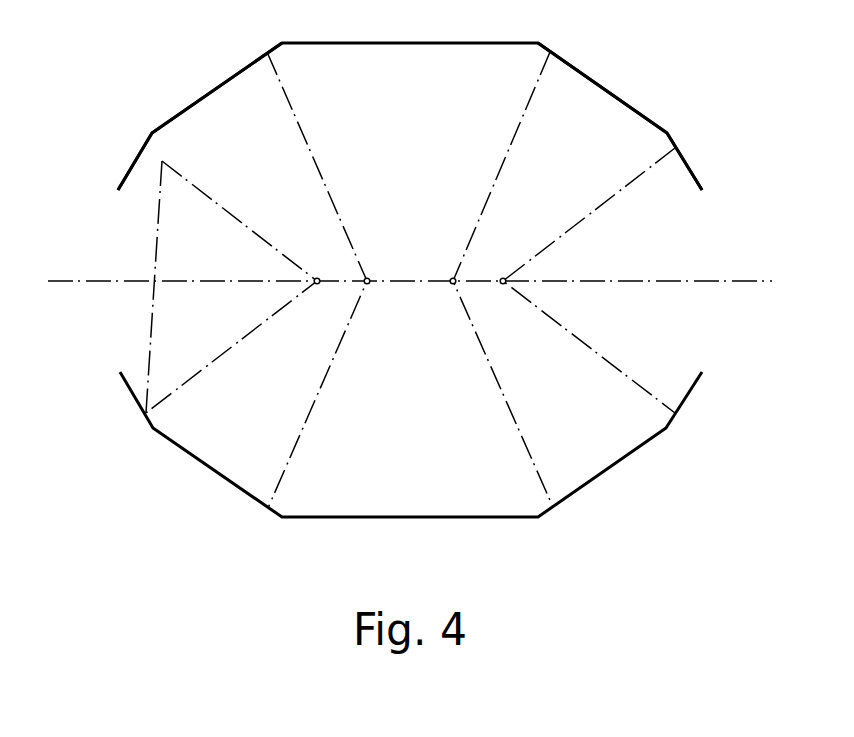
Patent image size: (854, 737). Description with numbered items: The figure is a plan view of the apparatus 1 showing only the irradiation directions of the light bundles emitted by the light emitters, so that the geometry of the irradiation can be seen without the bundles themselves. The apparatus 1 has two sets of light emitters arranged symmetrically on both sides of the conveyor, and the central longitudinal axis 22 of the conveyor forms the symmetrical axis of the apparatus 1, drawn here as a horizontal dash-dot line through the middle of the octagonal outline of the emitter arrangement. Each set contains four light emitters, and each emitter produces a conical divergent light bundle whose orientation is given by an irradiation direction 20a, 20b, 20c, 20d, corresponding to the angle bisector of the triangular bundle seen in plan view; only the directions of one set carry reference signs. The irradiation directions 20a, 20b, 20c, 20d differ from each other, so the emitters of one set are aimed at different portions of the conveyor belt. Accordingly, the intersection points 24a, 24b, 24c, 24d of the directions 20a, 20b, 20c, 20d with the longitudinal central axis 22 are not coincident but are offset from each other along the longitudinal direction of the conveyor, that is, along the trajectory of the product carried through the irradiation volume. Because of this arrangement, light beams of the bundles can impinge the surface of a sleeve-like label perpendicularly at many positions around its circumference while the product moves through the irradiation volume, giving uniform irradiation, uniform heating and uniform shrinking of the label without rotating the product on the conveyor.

The apparatus 1 is at (644, 80).
The irradiation direction 20a is at (160, 157).
The irradiation direction 20b is at (285, 90).
The irradiation direction 20c is at (546, 68).
The irradiation direction 20d is at (666, 154).
The central longitudinal axis 22 is at (729, 282).
The intersection point 24a is at (317, 281).
The intersection point 24b is at (367, 281).
The intersection point 24c is at (453, 281).
The intersection point 24d is at (503, 281).